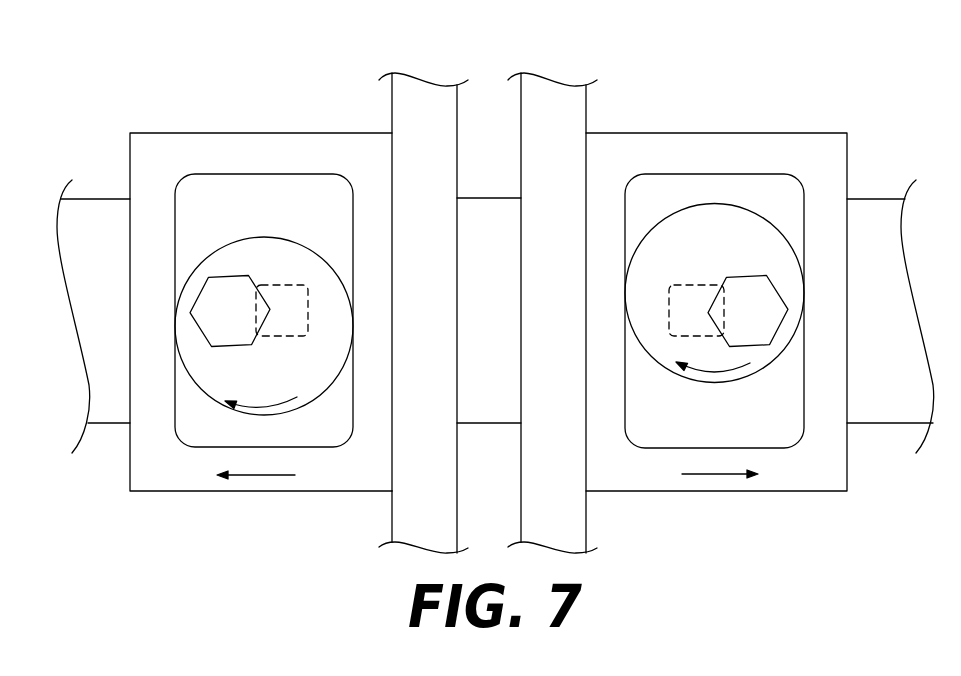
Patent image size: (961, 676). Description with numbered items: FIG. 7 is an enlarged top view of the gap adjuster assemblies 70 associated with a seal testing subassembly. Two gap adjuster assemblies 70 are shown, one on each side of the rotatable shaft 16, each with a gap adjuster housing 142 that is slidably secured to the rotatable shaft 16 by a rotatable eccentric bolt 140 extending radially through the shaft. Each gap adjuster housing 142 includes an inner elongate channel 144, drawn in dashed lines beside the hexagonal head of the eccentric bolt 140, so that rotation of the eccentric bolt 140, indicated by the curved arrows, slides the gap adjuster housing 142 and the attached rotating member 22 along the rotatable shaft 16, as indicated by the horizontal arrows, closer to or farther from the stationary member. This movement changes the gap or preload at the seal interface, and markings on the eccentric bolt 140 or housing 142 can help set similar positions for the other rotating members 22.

The gap adjuster assembly 70 is at (495, 308).
The rotating member 22 is at (430, 297).
The rotatable shaft 16 is at (498, 315).
The gap adjuster housing 142 is at (170, 477).
The eccentric bolt 140 is at (225, 292).
The inner elongate channel 144 is at (276, 286).